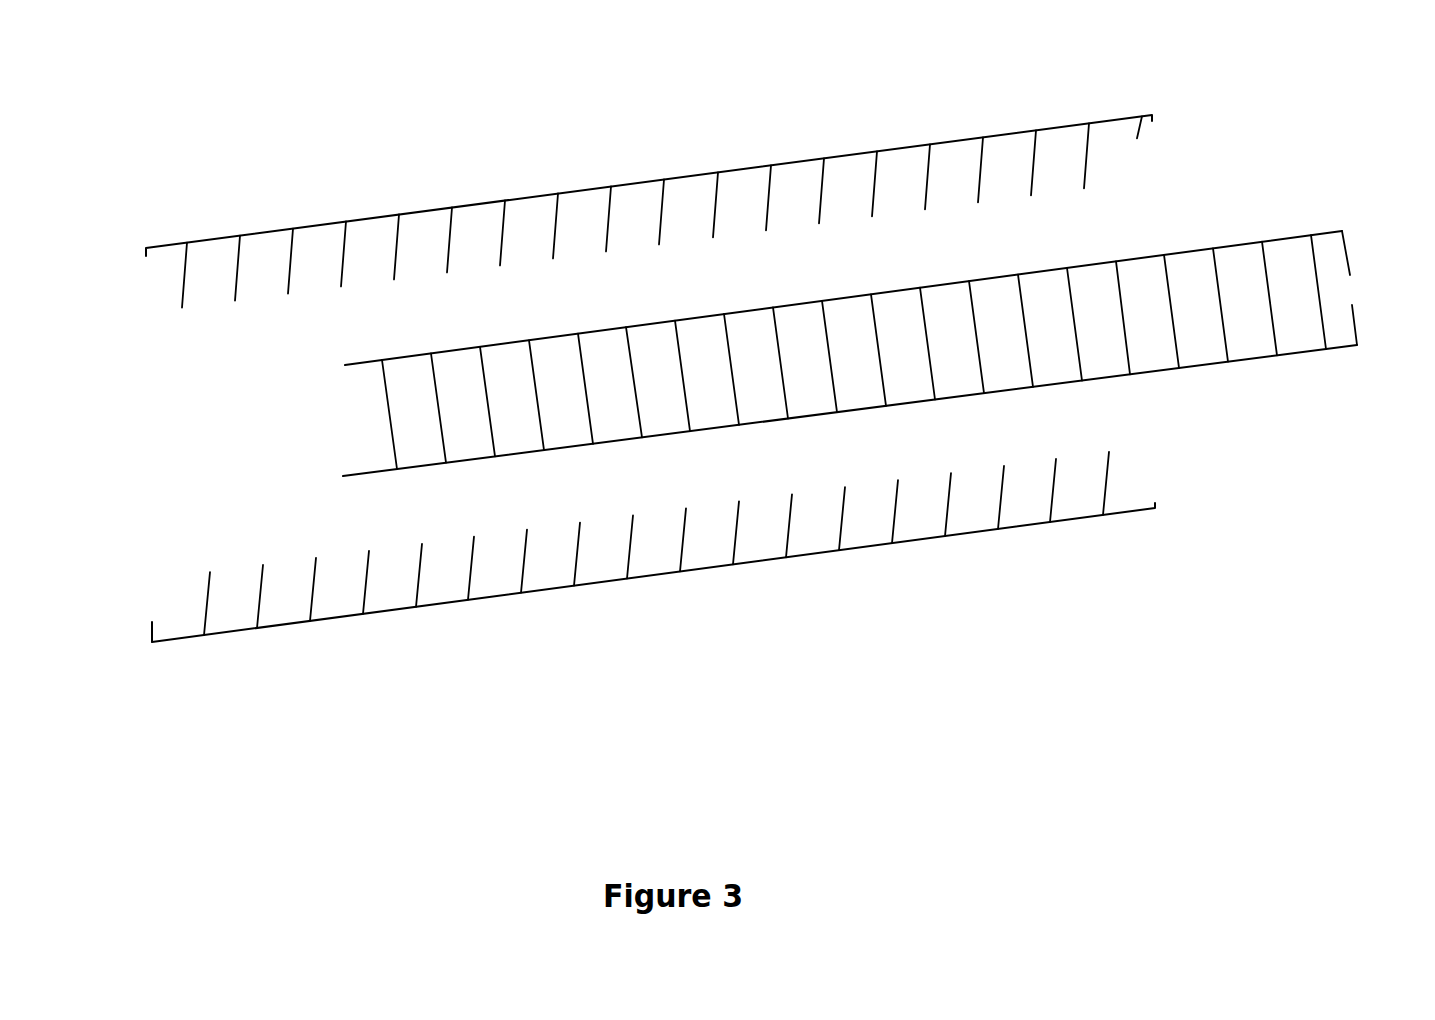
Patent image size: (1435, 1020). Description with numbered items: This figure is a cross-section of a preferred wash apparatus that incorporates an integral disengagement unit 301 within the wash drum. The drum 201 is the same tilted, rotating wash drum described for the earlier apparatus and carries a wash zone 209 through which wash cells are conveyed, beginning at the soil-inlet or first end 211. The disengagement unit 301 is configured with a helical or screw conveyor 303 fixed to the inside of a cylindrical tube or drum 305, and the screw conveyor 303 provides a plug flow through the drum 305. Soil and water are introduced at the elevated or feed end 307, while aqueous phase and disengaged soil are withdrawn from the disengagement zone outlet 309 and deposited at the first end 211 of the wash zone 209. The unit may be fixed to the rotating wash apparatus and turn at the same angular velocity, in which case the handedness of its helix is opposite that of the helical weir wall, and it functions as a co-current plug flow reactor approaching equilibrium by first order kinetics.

The drum 201 is at (234, 230).
The wash zone 209 is at (339, 117).
The first end 211 is at (138, 353).
The disengagement unit 301 is at (882, 287).
The screw conveyor 303 is at (1129, 340).
The drum 305 is at (1293, 256).
The feed end 307 is at (1357, 290).
The disengagement zone outlet 309 is at (385, 436).